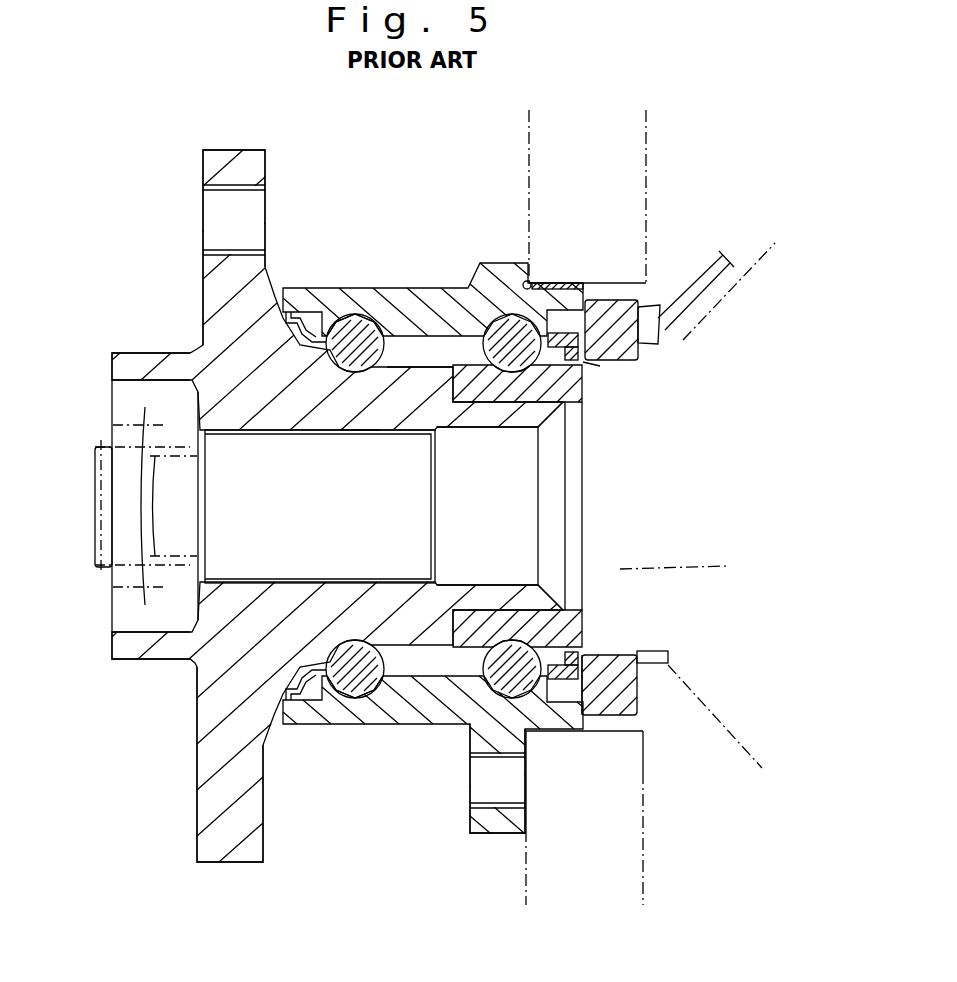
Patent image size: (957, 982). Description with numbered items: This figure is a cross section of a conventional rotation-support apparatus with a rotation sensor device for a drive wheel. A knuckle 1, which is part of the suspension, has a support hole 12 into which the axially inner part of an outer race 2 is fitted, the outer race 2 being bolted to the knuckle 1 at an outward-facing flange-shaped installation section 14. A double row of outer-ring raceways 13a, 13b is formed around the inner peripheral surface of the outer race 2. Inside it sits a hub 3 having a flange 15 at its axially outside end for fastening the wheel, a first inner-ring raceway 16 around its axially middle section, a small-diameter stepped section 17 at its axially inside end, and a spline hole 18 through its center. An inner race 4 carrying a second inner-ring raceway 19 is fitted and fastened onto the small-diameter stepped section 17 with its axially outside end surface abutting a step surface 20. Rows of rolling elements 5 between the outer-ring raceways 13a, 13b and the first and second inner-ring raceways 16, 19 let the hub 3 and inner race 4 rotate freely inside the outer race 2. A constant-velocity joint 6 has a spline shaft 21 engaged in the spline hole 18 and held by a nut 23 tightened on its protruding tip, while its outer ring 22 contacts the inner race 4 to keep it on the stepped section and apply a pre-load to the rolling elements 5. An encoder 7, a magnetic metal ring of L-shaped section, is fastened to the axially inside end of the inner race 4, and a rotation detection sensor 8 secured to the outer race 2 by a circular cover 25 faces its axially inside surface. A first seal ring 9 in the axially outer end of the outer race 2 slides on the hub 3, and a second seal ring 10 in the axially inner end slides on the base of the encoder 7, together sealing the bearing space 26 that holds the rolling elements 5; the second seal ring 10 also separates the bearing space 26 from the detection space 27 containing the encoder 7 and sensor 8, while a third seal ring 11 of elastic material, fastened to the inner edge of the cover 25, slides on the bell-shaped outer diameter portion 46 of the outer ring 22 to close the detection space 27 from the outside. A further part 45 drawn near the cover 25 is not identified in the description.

The knuckle 1 is at (603, 160).
The outer race 2 is at (428, 290).
The hub 3 is at (217, 409).
The inner race 4 is at (563, 398).
The rolling elements 5 is at (500, 318).
The constant-velocity joint 6 is at (758, 771).
The encoder 7 is at (632, 718).
The rotation detection sensor 8 is at (618, 316).
The first seal ring 9 is at (310, 700).
The second seal ring 10 is at (470, 786).
The third seal ring 11 is at (657, 663).
The support hole 12 is at (645, 300).
The outer-ring raceway 13a is at (458, 722).
The outer-ring raceway 13b is at (381, 289).
The installation section 14 is at (483, 830).
The flange 15 is at (207, 163).
The first inner-ring raceway 16 is at (350, 370).
The small-diameter stepped section 17 is at (492, 622).
The spline hole 18 is at (252, 434).
The second inner-ring raceway 19 is at (565, 432).
The step surface 20 is at (484, 430).
The spline shaft 21 is at (195, 672).
The outer ring for the constant-velocity joint 22 is at (690, 567).
The nut 23 is at (165, 427).
The cover 25 is at (597, 287).
The bearing space 26 is at (421, 368).
The detection space 27 is at (600, 680).
The bracket 45 is at (598, 366).
The bell-shaped outer diameter portion 46 is at (727, 302).